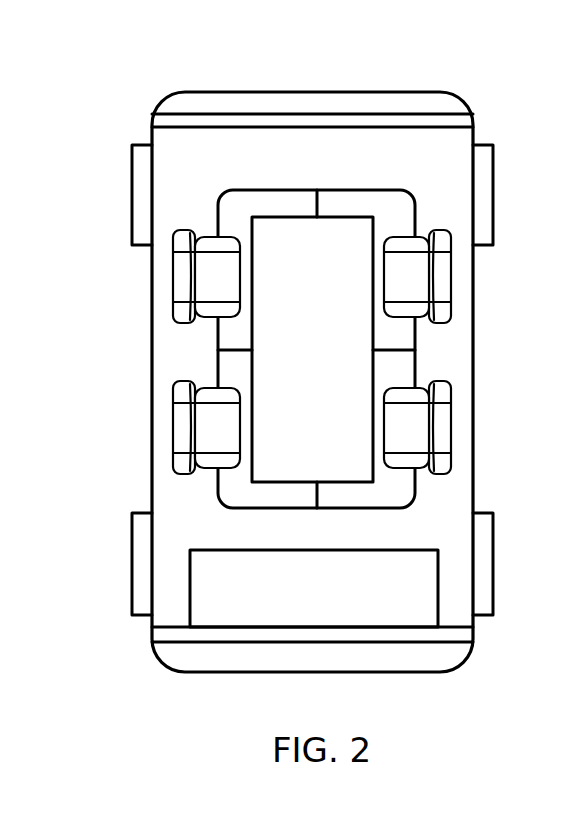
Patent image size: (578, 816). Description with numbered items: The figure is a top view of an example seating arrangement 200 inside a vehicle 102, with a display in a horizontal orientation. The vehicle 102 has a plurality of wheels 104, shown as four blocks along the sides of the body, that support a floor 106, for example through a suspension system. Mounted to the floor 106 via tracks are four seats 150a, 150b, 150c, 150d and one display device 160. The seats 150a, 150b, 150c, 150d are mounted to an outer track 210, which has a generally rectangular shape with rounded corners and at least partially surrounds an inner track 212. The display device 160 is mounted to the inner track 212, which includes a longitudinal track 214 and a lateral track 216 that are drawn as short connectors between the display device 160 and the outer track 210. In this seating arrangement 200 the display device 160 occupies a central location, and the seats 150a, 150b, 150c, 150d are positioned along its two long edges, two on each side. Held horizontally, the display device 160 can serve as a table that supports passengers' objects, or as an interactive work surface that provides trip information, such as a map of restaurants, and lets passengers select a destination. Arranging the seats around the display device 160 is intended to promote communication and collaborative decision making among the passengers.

The vehicle 102 is at (175, 99).
The wheels 104 is at (137, 225).
The floor 106 is at (175, 148).
The seating arrangement 200 is at (183, 202).
The seat 150a is at (172, 277).
The seat 150b is at (172, 424).
The seat 150c is at (447, 294).
The seat 150d is at (443, 420).
The outer track 210 is at (378, 187).
The inner track 212 is at (317, 193).
The longitudinal track 214 is at (318, 493).
The lateral track 216 is at (407, 352).
The display device 160 is at (368, 476).